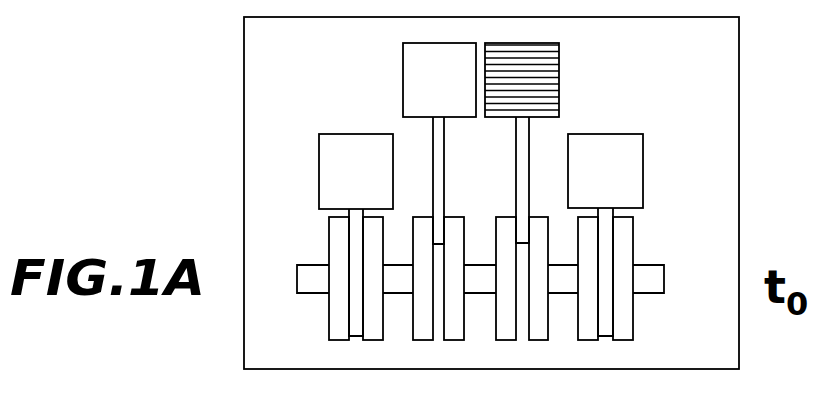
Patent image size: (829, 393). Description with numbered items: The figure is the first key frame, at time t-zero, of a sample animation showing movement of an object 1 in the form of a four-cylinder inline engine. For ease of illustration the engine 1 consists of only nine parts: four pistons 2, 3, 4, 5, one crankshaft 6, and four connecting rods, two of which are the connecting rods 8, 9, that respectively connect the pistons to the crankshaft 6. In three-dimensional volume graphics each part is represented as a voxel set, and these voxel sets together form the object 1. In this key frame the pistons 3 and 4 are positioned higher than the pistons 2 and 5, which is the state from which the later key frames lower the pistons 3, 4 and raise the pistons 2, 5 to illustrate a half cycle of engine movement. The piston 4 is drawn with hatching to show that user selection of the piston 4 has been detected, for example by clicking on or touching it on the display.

The object 1 is at (670, 78).
The piston 2 is at (329, 158).
The piston 3 is at (412, 67).
The piston 4 is at (549, 67).
The piston 5 is at (633, 158).
The crankshaft 6 is at (655, 271).
The connecting rod 8 is at (440, 151).
The connecting rod 9 is at (520, 183).